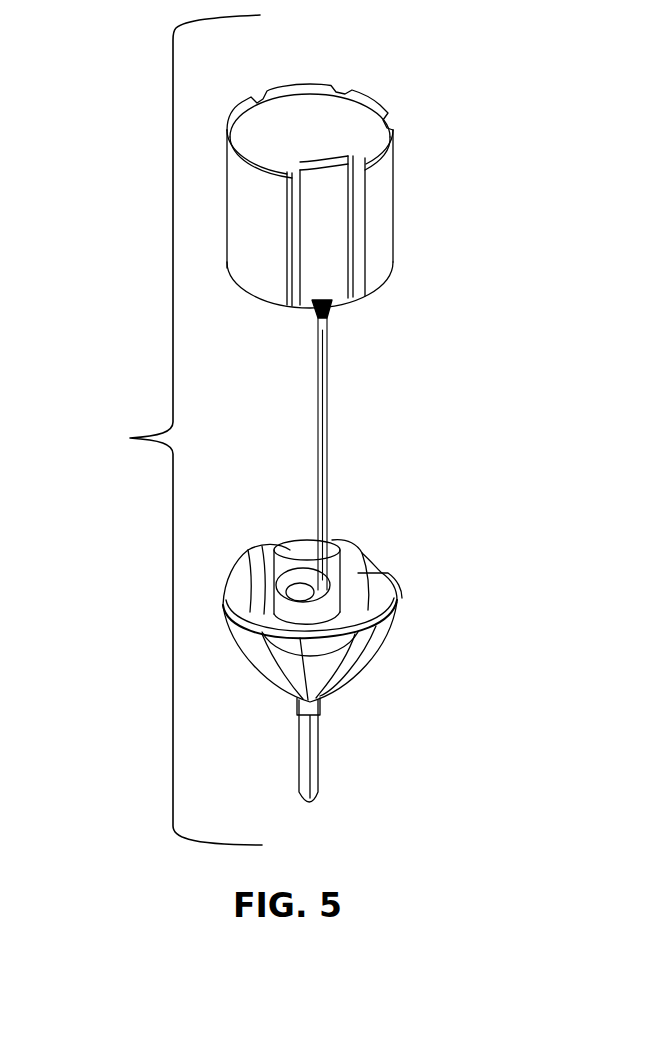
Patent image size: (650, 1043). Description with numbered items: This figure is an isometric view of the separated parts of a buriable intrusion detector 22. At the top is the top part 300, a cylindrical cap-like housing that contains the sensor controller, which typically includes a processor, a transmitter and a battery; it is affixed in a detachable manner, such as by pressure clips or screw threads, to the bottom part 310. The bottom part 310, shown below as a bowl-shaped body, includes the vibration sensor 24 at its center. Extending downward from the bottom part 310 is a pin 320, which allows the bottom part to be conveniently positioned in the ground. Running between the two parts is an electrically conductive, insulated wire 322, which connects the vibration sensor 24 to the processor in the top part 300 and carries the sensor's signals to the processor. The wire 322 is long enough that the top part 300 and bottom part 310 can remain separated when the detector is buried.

The intrusion detector 22 is at (130, 438).
The vibration sensor 24 is at (318, 588).
The top part 300 is at (393, 163).
The bottom part 310 is at (396, 600).
The pin 320 is at (322, 737).
The electrically conductive, insulated wire 322 is at (327, 387).